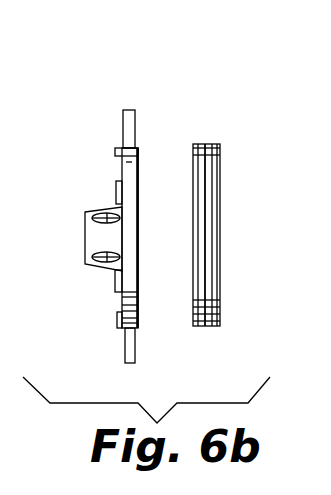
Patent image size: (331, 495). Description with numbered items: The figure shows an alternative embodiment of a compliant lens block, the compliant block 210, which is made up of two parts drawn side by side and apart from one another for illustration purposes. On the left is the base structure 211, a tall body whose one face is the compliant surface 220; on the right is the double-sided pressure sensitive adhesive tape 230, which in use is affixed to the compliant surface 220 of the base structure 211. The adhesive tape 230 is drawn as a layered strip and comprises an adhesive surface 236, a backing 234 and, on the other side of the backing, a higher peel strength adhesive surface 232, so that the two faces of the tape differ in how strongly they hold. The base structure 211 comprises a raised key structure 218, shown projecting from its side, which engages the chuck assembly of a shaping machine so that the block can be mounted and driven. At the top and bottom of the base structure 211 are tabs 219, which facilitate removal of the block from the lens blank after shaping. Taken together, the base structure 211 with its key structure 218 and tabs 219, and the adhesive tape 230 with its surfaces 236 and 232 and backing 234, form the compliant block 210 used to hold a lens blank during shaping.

The compliant block 210 is at (184, 56).
The base structure 211 is at (118, 131).
The raised key structure 218 is at (96, 210).
The tabs 219 is at (128, 110).
The compliant surface 220 is at (140, 172).
The double-sided pressure sensitive adhesive tape 230 is at (225, 181).
The higher peel strength adhesive surface 232 is at (197, 327).
The backing 234 is at (207, 327).
The adhesive surface 236 is at (210, 144).